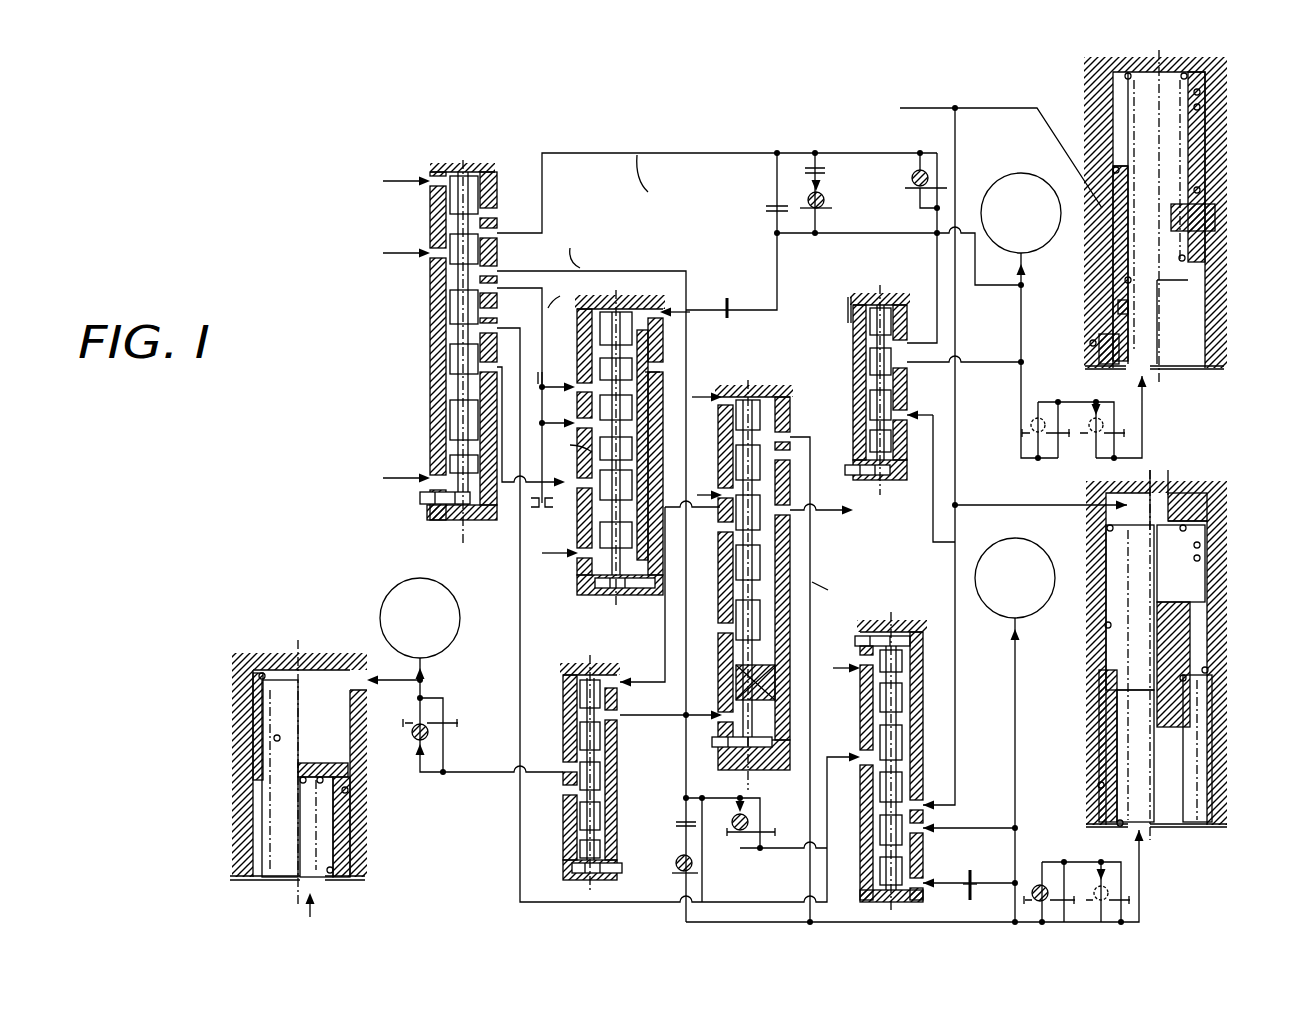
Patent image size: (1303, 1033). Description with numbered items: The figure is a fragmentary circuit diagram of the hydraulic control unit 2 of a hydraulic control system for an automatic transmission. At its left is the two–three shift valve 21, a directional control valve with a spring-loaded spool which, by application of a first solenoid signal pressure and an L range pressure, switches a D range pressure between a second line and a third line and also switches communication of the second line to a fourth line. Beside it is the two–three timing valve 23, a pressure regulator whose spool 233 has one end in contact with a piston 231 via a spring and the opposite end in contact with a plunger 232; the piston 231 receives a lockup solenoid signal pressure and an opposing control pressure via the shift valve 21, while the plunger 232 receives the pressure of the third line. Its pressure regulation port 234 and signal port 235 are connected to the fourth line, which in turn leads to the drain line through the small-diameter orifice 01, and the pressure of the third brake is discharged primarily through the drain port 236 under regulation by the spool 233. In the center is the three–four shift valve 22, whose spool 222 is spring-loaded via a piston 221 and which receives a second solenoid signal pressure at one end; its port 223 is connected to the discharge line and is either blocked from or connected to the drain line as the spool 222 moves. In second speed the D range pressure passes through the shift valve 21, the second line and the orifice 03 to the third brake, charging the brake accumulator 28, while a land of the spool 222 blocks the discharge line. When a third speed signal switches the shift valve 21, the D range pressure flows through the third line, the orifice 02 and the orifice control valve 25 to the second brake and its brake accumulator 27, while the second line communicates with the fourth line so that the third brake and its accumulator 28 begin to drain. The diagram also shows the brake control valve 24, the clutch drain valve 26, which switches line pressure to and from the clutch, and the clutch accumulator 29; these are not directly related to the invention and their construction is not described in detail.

The hydraulic control unit 2 is at (726, 138).
The 2–3 shift valve 21 is at (462, 168).
The 3–4 shift valve 22 is at (759, 375).
The 2–3 timing valve 23 is at (622, 292).
The B-3 control valve 24 is at (884, 616).
The B-2 orifice control valve 25 is at (889, 288).
The C-0 drain valve 26 is at (598, 658).
The B-2 brake accumulator 27 is at (1240, 188).
The B-3 brake accumulator 28 is at (1240, 652).
The C-0 clutch accumulator 29 is at (313, 640).
The piston 221 is at (736, 688).
The spool 222 is at (785, 412).
The port 223 is at (780, 440).
The piston 231 is at (582, 570).
The plunger 232 is at (766, 318).
The spool 233 is at (648, 452).
The pressure regulation port 234 is at (600, 418).
The signal port 235 is at (595, 380).
The drain port 236 is at (595, 478).
The small-diameter orifice 01 is at (532, 503).
The orifice 02 is at (943, 182).
The orifice 03 is at (703, 856).